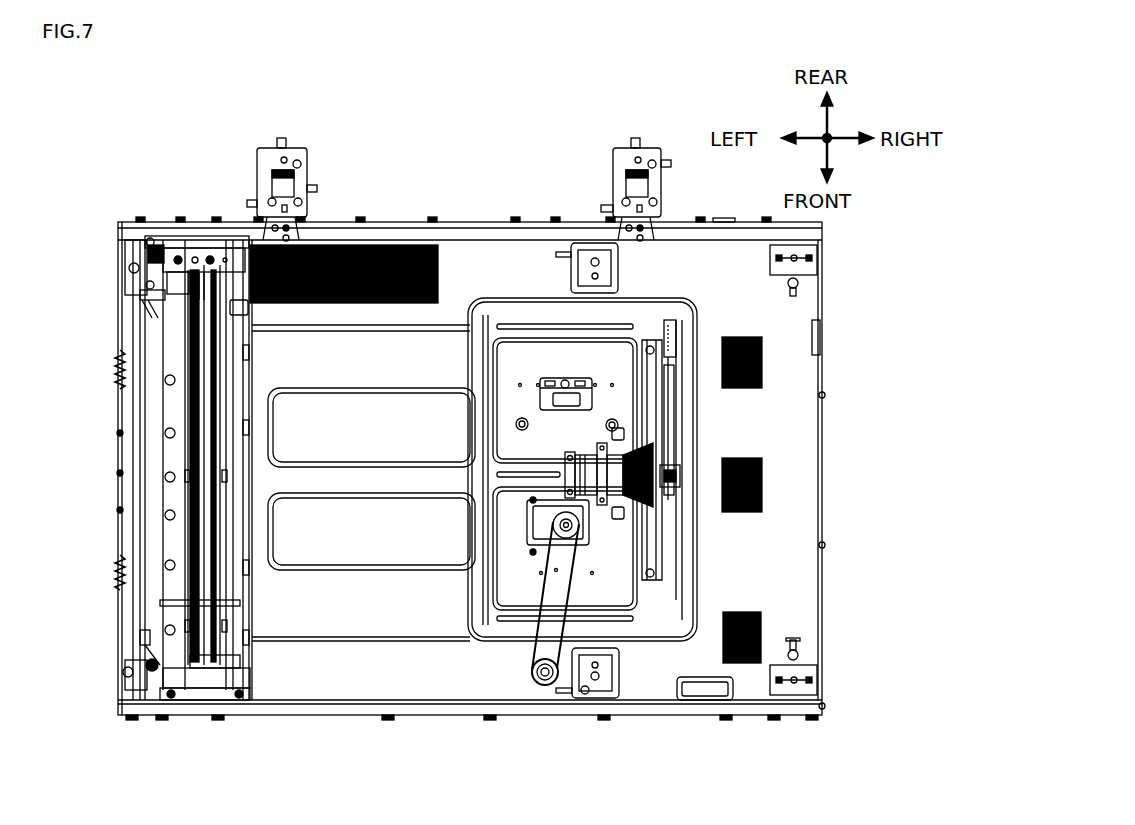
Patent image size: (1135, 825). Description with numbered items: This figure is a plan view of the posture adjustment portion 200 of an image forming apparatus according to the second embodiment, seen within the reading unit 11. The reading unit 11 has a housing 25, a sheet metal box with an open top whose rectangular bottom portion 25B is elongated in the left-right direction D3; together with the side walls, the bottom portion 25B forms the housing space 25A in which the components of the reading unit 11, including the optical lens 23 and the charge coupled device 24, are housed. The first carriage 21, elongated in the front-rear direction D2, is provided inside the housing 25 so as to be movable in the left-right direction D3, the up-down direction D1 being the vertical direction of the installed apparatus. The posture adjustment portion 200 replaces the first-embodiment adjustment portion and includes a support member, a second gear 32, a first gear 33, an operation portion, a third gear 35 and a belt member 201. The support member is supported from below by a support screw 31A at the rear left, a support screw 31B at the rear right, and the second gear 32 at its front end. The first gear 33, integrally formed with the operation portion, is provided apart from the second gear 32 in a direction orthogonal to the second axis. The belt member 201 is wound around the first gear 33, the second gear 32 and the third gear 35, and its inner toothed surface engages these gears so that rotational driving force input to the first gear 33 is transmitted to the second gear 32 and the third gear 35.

The reading unit 11 is at (170, 187).
The first carriage 21 is at (238, 528).
The optical lens 23 is at (590, 458).
The charge coupled device (CCD) 24 is at (642, 387).
The housing 25 is at (130, 338).
The housing space 25A is at (493, 280).
The bottom portion 25B is at (332, 480).
The support screw 31A is at (522, 423).
The support screw 31B is at (612, 423).
The second gear 32 is at (581, 551).
The third gear 35 is at (570, 540).
The first gear 33 is at (533, 670).
The posture adjustment portion 200 is at (520, 567).
The belt member 201 is at (570, 613).
The up-down direction D1 is at (826, 145).
The front-rear direction D2 is at (828, 124).
The left-right direction D3 is at (838, 142).